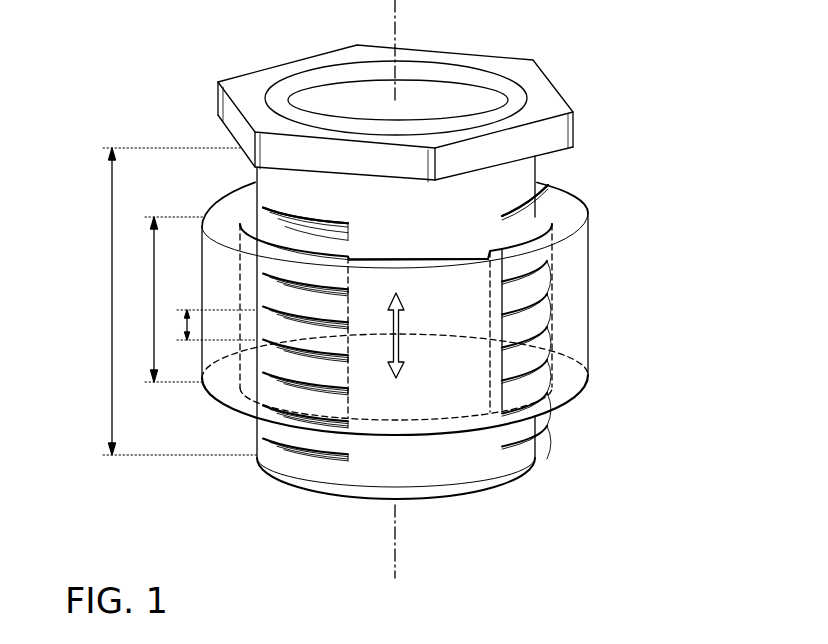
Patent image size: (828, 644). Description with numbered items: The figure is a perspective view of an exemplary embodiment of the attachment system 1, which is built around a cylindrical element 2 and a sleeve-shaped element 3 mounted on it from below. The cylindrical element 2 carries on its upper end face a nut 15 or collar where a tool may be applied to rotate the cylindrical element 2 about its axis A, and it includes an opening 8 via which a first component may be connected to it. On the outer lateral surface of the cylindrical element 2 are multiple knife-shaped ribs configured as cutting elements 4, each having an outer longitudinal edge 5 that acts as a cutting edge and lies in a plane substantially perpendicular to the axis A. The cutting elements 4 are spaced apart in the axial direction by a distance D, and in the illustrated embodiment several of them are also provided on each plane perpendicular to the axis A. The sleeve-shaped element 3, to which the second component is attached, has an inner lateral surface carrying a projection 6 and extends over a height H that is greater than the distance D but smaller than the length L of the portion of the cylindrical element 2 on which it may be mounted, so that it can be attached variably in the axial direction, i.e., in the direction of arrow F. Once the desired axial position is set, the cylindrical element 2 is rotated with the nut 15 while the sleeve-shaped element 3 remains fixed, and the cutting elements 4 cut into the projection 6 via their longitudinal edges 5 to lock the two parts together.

The attachment system 1 is at (192, 62).
The cylindrical element 2 is at (468, 477).
The sleeve-shaped element 3 is at (572, 378).
The cutting elements 4 is at (312, 222).
The longitudinal edge 5 is at (280, 210).
The projection 6 is at (457, 250).
The opening 8 is at (342, 103).
The nut 15 is at (419, 93).
The axis A is at (394, 28).
The arrow F is at (396, 340).
The length L is at (173, 301).
The height H is at (167, 299).
The distance D is at (210, 325).